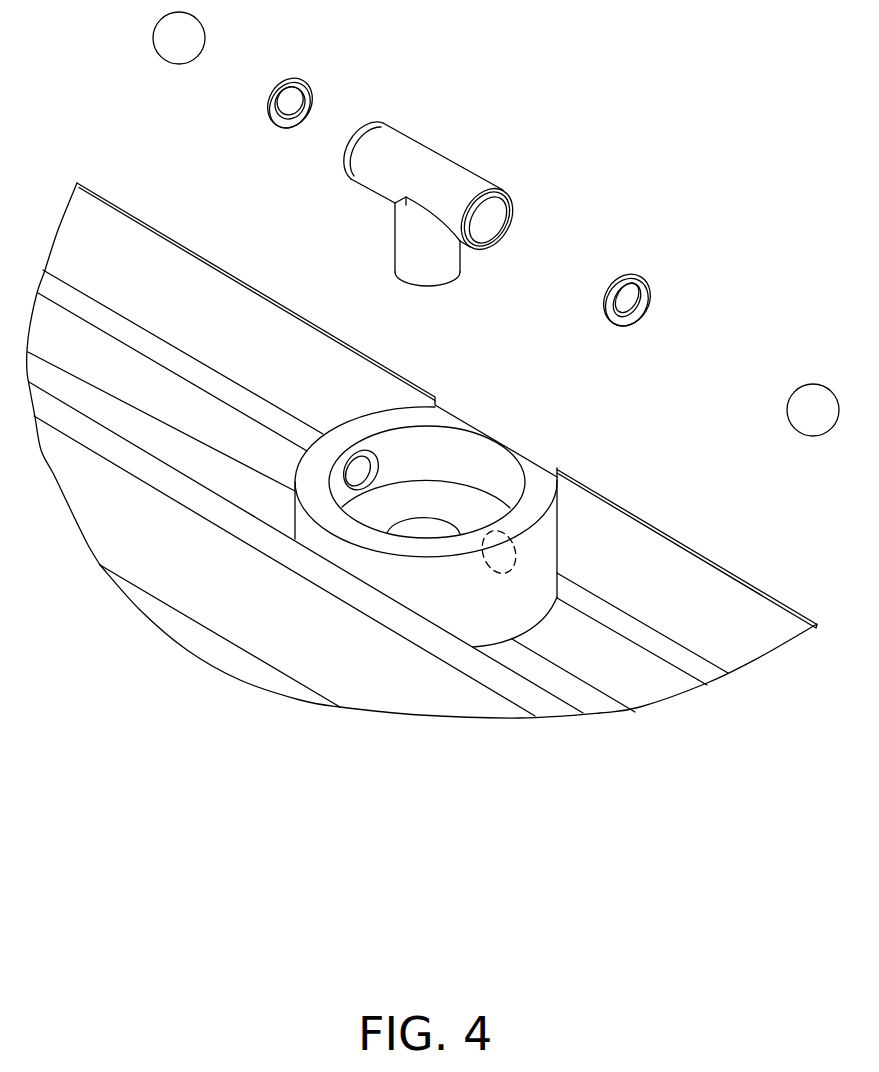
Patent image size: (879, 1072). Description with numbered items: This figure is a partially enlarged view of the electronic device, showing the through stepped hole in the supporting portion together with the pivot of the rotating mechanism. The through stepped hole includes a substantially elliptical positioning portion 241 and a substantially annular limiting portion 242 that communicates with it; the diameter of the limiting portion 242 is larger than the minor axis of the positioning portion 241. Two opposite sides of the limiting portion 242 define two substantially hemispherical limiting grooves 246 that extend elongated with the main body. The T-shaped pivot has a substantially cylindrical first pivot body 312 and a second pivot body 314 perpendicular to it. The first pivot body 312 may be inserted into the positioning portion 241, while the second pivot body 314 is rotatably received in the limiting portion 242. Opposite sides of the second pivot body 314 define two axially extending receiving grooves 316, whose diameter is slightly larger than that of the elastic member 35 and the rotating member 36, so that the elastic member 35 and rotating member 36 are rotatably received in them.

The limiting portion 242 is at (537, 505).
The positioning portion 241 is at (430, 535).
The limiting groove 246 is at (360, 468).
The second pivot body 314 is at (407, 158).
The receiving groove 316 is at (490, 221).
The first pivot body 312 is at (440, 262).
The elastic member 35 is at (633, 275).
The rotating member 36 is at (810, 405).